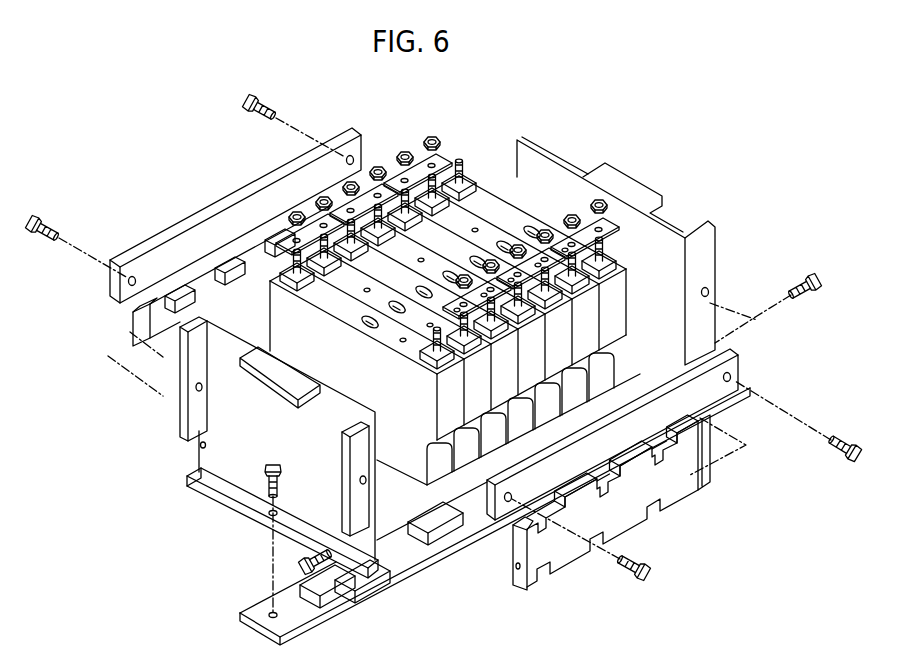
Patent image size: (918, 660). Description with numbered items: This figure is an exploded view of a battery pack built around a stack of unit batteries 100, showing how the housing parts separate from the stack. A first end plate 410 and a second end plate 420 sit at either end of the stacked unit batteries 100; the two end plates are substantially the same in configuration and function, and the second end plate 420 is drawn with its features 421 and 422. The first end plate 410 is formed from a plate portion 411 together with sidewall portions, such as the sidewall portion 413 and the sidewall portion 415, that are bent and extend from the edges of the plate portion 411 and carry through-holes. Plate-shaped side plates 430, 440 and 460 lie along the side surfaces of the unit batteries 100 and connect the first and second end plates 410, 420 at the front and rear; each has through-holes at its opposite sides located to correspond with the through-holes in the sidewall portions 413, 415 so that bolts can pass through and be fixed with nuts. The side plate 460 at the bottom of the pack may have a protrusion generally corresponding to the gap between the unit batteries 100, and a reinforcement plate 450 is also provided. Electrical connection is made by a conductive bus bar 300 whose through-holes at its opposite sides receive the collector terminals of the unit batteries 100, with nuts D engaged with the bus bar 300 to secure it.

The unit battery 100 is at (470, 178).
The bus bar 300 is at (423, 163).
The nut D is at (433, 139).
The first end plate 410 is at (239, 448).
The plate portion 411 is at (240, 452).
The second sidewall portion 413 is at (186, 412).
The fourth sidewall portion 415 is at (245, 498).
The second end plate 420 is at (632, 224).
The end plate post 421 is at (668, 223).
The end plate protrusion 422 is at (623, 178).
The side plate 430 is at (130, 282).
The side plate 440 is at (733, 367).
The reinforcement plate 450 is at (673, 488).
The side plate 460 is at (370, 580).